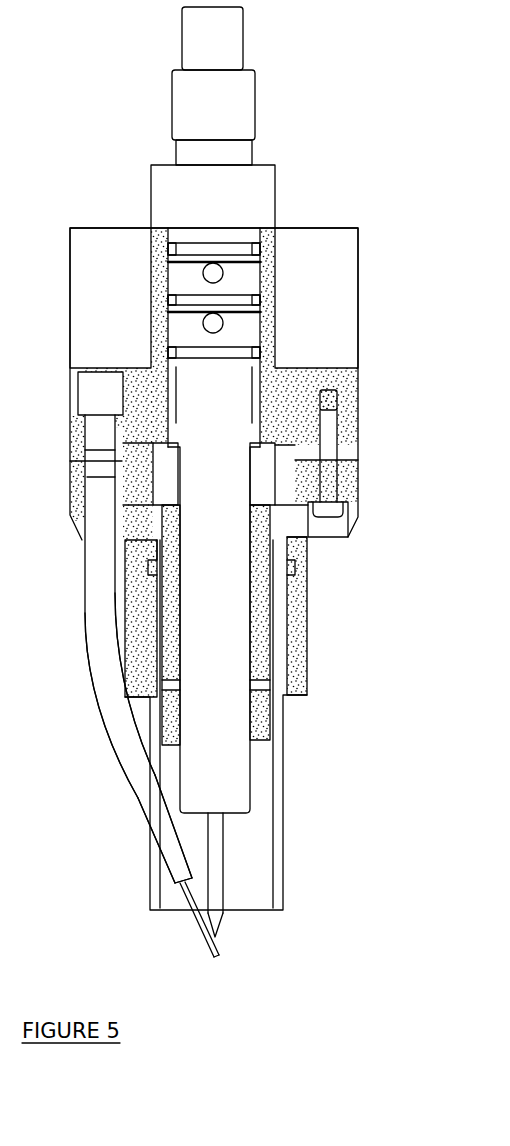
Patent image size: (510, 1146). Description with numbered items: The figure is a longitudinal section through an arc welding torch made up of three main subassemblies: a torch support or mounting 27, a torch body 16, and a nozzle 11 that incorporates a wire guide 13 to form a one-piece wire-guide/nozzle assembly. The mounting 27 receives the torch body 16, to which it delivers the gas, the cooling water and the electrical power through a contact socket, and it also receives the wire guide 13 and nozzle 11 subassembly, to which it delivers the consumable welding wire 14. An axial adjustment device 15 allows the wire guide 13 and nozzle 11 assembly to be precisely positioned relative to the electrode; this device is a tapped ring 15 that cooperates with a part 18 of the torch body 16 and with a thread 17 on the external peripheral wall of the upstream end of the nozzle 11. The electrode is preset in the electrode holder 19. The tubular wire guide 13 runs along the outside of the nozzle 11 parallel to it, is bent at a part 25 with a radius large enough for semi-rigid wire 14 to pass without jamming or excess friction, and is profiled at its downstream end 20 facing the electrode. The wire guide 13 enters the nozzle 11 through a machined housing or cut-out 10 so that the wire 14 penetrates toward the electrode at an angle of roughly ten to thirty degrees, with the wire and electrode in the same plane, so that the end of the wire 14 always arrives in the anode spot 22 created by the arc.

The cut-out 10 is at (148, 828).
The nozzle 11 is at (509, 863).
The wire guide 13 is at (130, 770).
The welding wire 14 is at (200, 930).
The axial adjustment device 15 is at (313, 625).
The torch body 16 is at (275, 207).
The thread 17 is at (287, 660).
The part of the torch body 18 is at (310, 581).
The electrode holder 19 is at (230, 775).
The downstream end 20 is at (177, 867).
The anode spot 22 is at (100, 368).
The bent part 25 is at (110, 695).
The torch support or mounting 27 is at (358, 402).